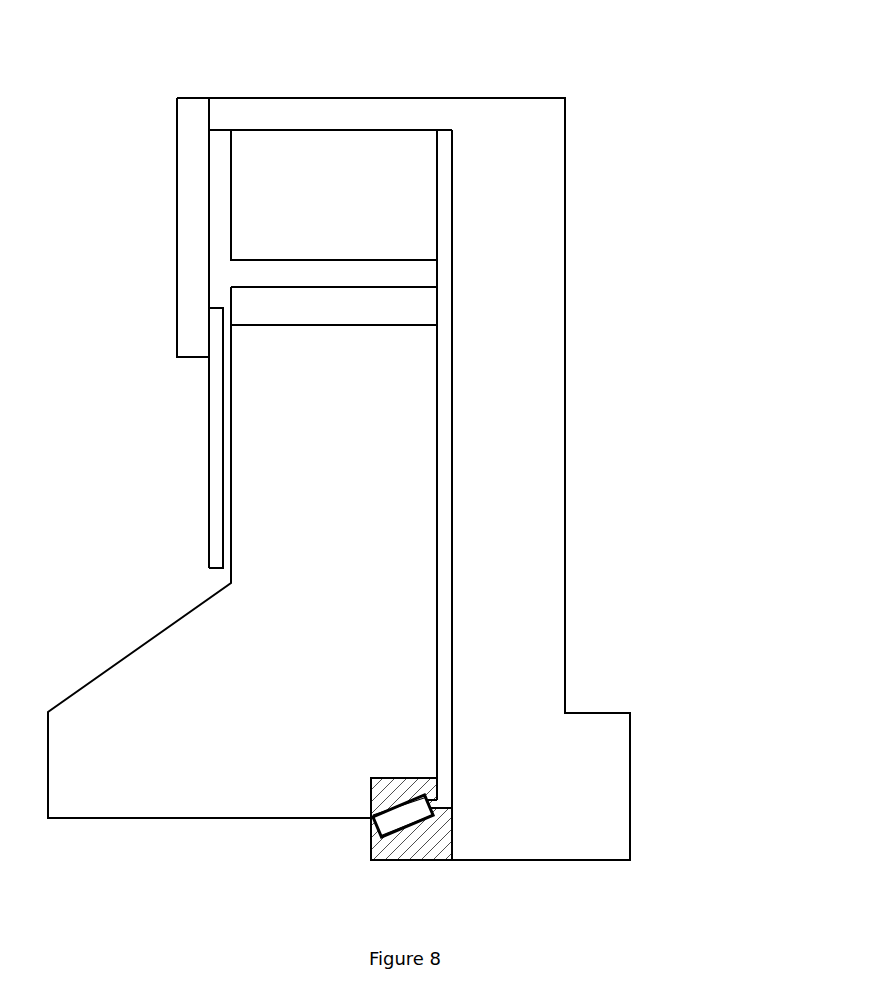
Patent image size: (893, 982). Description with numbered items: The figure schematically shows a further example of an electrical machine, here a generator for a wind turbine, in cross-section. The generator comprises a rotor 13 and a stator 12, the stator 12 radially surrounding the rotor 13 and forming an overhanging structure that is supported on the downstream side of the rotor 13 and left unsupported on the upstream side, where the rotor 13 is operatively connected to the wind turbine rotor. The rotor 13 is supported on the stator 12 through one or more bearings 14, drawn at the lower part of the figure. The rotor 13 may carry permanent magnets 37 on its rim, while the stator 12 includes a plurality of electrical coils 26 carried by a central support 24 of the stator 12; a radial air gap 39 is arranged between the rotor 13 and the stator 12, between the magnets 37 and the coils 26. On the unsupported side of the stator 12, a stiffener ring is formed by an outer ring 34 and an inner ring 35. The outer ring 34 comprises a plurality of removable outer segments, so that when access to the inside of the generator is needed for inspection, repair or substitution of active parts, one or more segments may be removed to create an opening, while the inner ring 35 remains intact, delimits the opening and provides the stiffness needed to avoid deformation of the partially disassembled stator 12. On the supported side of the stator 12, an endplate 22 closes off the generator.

The stator 12 is at (600, 140).
The rotor 13 is at (222, 625).
The bearing 14 is at (420, 835).
The endplate 22 is at (525, 637).
The central support 24 is at (352, 116).
The electrical coils 26 is at (418, 208).
The outer ring 34 is at (193, 167).
The inner ring 35 is at (222, 403).
The permanent magnets 37 is at (422, 308).
The radial air gap 39 is at (407, 275).